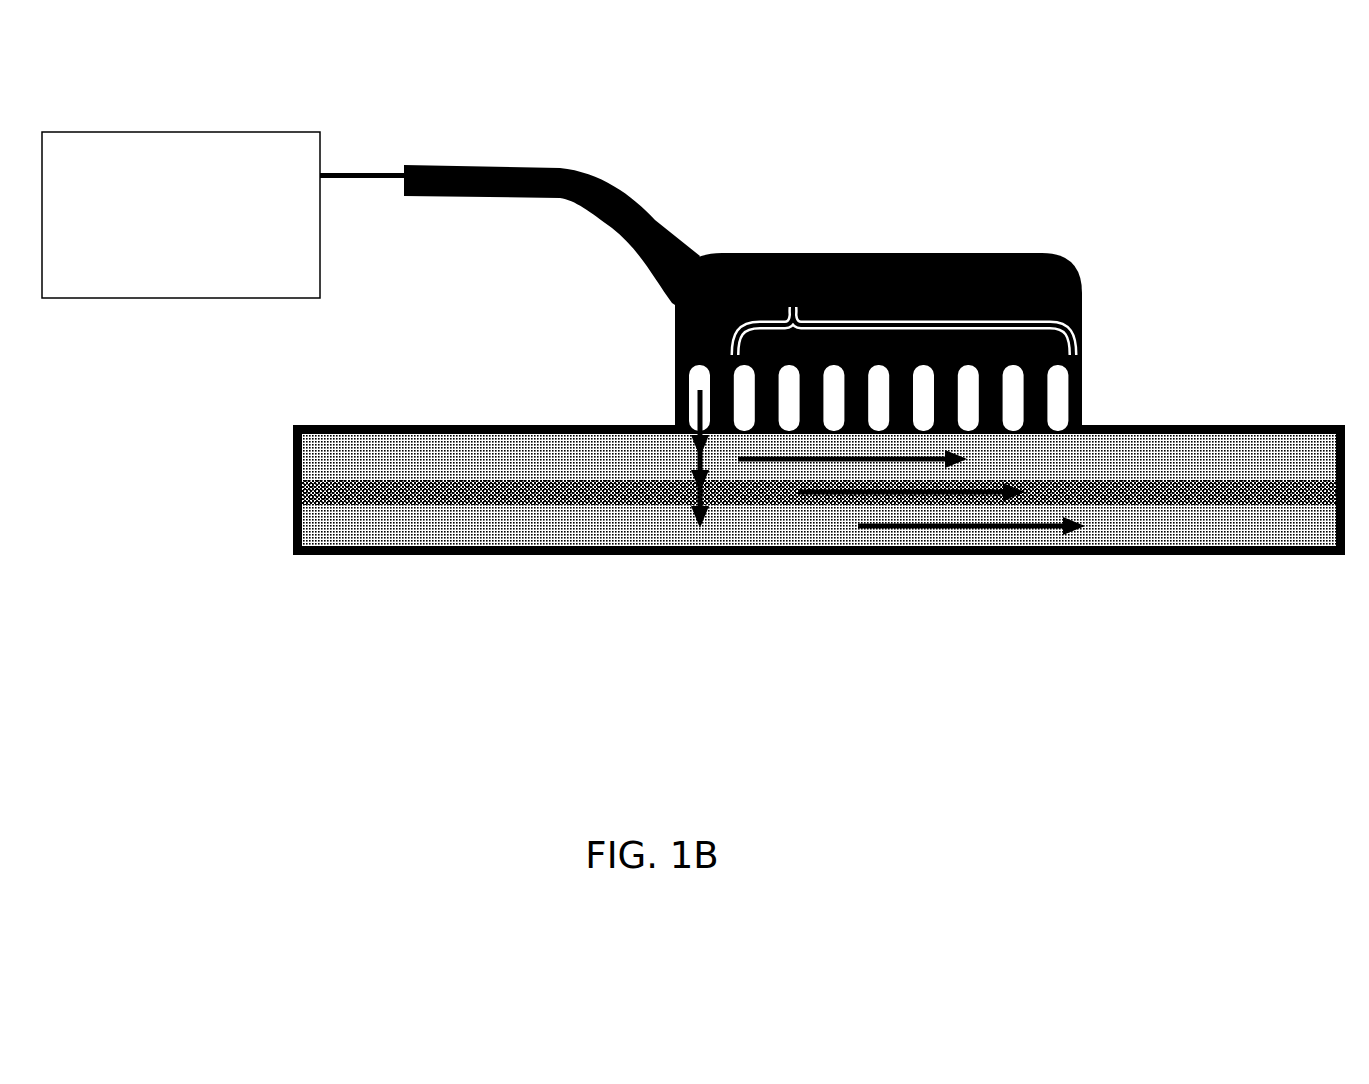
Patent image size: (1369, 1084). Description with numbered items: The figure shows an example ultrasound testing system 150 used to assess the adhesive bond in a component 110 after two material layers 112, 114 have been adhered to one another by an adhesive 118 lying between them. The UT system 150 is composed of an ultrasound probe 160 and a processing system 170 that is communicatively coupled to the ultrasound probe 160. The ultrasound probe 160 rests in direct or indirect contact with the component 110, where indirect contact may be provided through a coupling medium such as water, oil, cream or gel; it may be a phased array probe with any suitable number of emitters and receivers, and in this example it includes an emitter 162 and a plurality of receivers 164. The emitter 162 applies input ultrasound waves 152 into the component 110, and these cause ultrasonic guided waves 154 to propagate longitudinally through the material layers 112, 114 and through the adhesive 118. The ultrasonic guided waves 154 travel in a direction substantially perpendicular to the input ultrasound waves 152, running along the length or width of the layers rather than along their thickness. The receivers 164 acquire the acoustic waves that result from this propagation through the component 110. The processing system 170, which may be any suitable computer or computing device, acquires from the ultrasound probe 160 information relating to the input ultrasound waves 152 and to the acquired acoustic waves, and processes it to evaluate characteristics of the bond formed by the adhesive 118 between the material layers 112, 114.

The component 110 is at (293, 533).
The material layer 112 is at (387, 533).
The material layer 114 is at (393, 435).
The adhesive 118 is at (318, 492).
The UT system 150 is at (1222, 186).
The input ultrasound waves 152 is at (650, 485).
The ultrasonic guided waves 154 is at (968, 584).
The ultrasound probe 160 is at (975, 256).
The emitter 162 is at (675, 378).
The receivers 164 is at (903, 350).
The processing system 170 is at (155, 277).